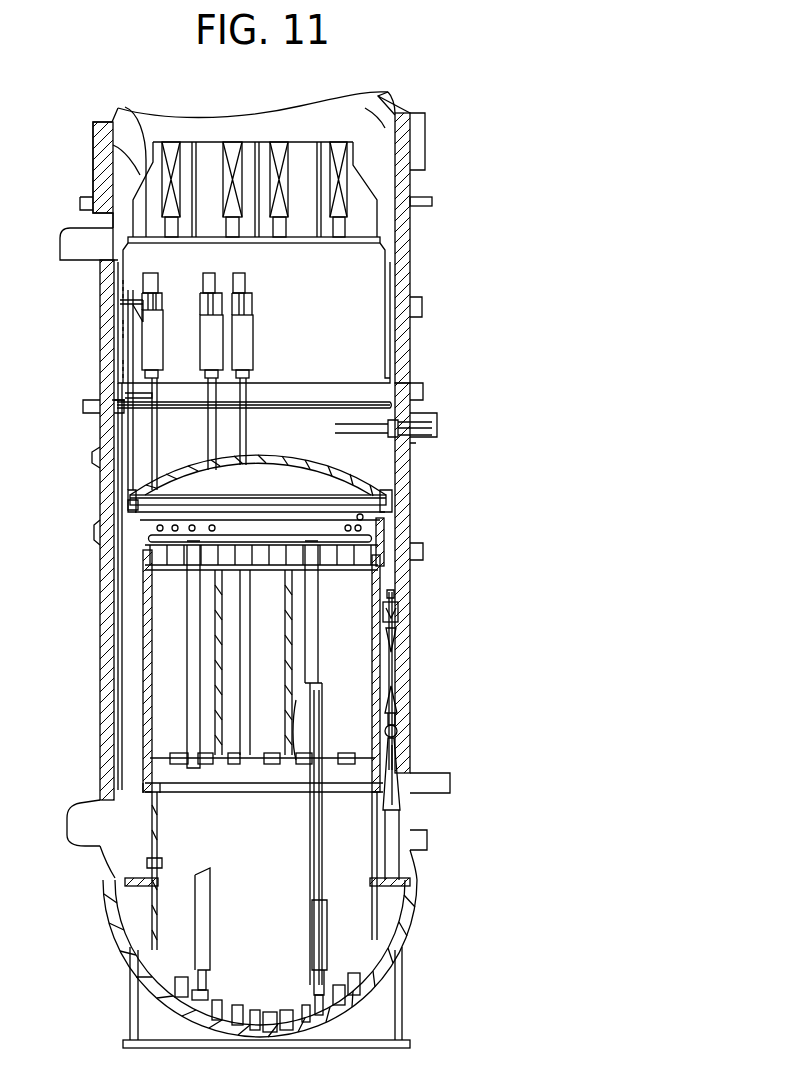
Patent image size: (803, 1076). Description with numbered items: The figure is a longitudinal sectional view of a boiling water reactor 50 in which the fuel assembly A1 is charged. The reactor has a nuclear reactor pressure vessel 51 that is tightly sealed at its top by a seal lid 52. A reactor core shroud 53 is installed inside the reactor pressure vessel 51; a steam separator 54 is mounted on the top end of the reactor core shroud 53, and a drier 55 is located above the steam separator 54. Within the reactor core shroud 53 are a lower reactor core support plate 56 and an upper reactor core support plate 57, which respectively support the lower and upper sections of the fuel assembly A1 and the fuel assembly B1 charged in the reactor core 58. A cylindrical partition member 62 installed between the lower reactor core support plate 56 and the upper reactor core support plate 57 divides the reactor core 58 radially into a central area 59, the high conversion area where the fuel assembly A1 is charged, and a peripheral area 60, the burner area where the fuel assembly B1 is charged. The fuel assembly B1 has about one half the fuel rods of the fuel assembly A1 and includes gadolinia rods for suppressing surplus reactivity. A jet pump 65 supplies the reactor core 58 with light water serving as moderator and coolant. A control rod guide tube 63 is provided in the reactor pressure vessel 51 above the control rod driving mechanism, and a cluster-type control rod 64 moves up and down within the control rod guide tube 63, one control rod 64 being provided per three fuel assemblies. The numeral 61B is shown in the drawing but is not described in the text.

The boiling water reactor 50 is at (418, 262).
The nuclear reactor pressure vessel 51 is at (106, 506).
The seal lid 52 is at (392, 100).
The reactor core shroud 53 is at (136, 658).
The steam separator 54 is at (143, 343).
The drier 55 is at (145, 170).
The lower reactor core support plate 56 is at (352, 741).
The upper reactor core support plate 57 is at (386, 541).
The reactor core 58 is at (165, 705).
The central area 59 is at (285, 639).
The peripheral area 60 is at (187, 632).
The instrument guide tube 61B is at (320, 670).
The cylindrical partition member 62 is at (288, 735).
The control rod guide tube 63 is at (205, 900).
The control rod 64 is at (313, 945).
The jet pump 65 is at (398, 693).
The fuel assembly A1 is at (251, 772).
The fuel assembly B1 is at (200, 770).